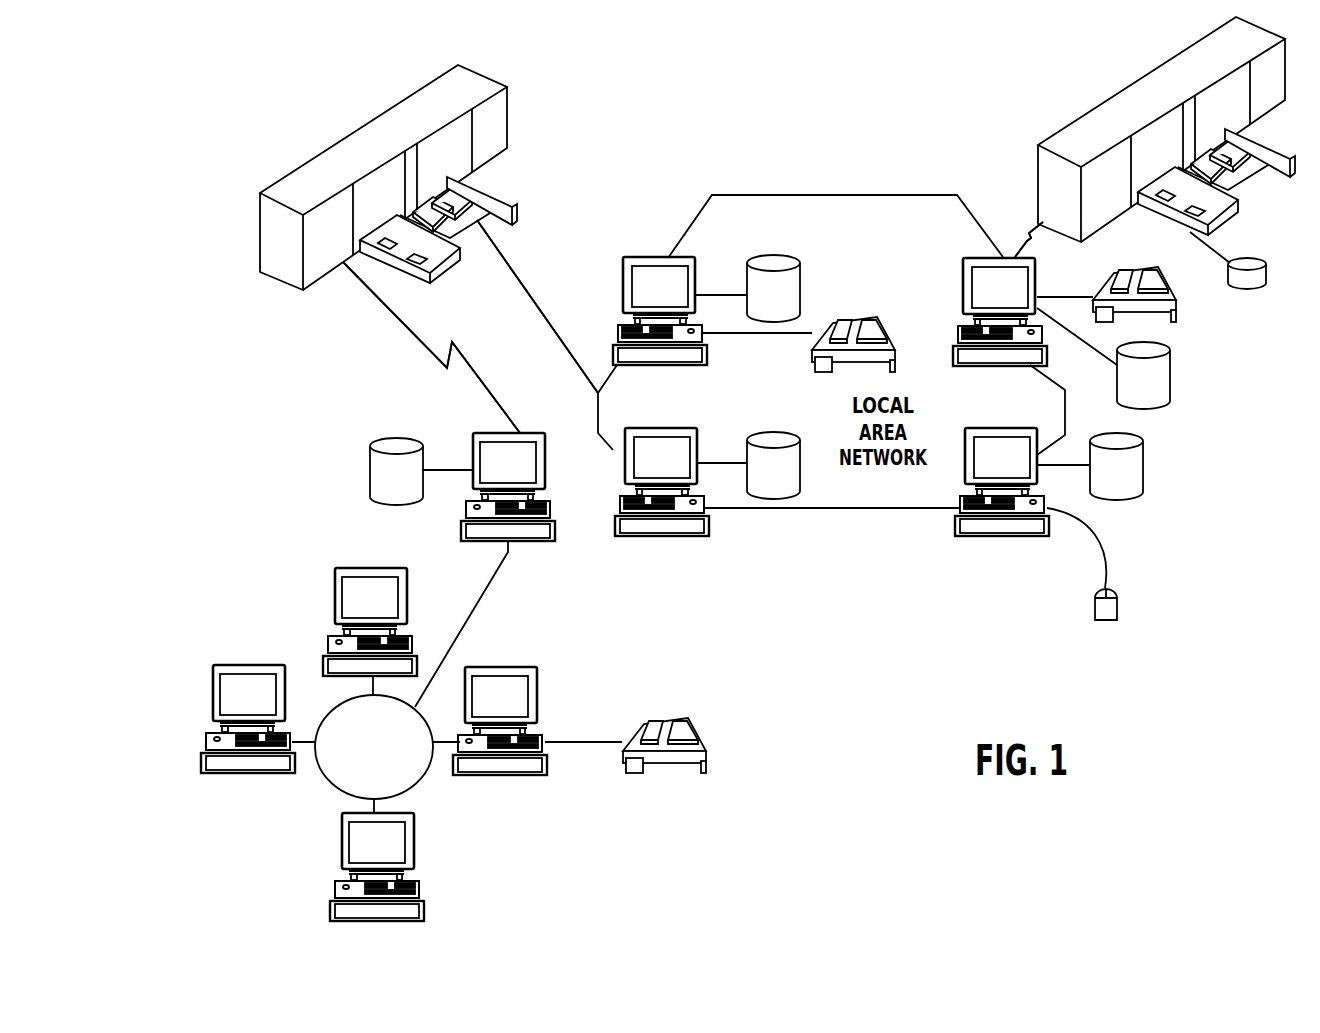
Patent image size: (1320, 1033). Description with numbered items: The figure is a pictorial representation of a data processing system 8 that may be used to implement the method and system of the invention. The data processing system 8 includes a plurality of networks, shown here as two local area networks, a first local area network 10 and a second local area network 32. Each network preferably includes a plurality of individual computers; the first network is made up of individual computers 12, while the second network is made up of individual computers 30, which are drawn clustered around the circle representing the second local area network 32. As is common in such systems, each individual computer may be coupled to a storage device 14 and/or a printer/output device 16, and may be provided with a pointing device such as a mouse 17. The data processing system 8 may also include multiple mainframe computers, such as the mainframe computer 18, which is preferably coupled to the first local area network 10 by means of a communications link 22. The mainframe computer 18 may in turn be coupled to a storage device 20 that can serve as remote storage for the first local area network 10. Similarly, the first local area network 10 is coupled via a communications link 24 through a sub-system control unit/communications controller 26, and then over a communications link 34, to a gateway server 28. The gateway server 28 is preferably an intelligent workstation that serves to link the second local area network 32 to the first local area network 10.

The data processing system 8 is at (897, 185).
The local area network 10 is at (817, 510).
The individual computer 12 is at (643, 258).
The storage device 14 is at (790, 253).
The printer/output device 16 is at (882, 323).
The mouse 17 is at (1117, 602).
The mainframe computer 18 is at (1125, 92).
The storage device 20 is at (1238, 287).
The communications link 22 is at (1027, 240).
The communications link 24 is at (525, 285).
The sub-system control unit/communications controller 26 is at (322, 153).
The gateway server 28 is at (473, 438).
The individual computer 30 is at (333, 592).
The local area network 32 is at (322, 775).
The communications link 34 is at (382, 303).